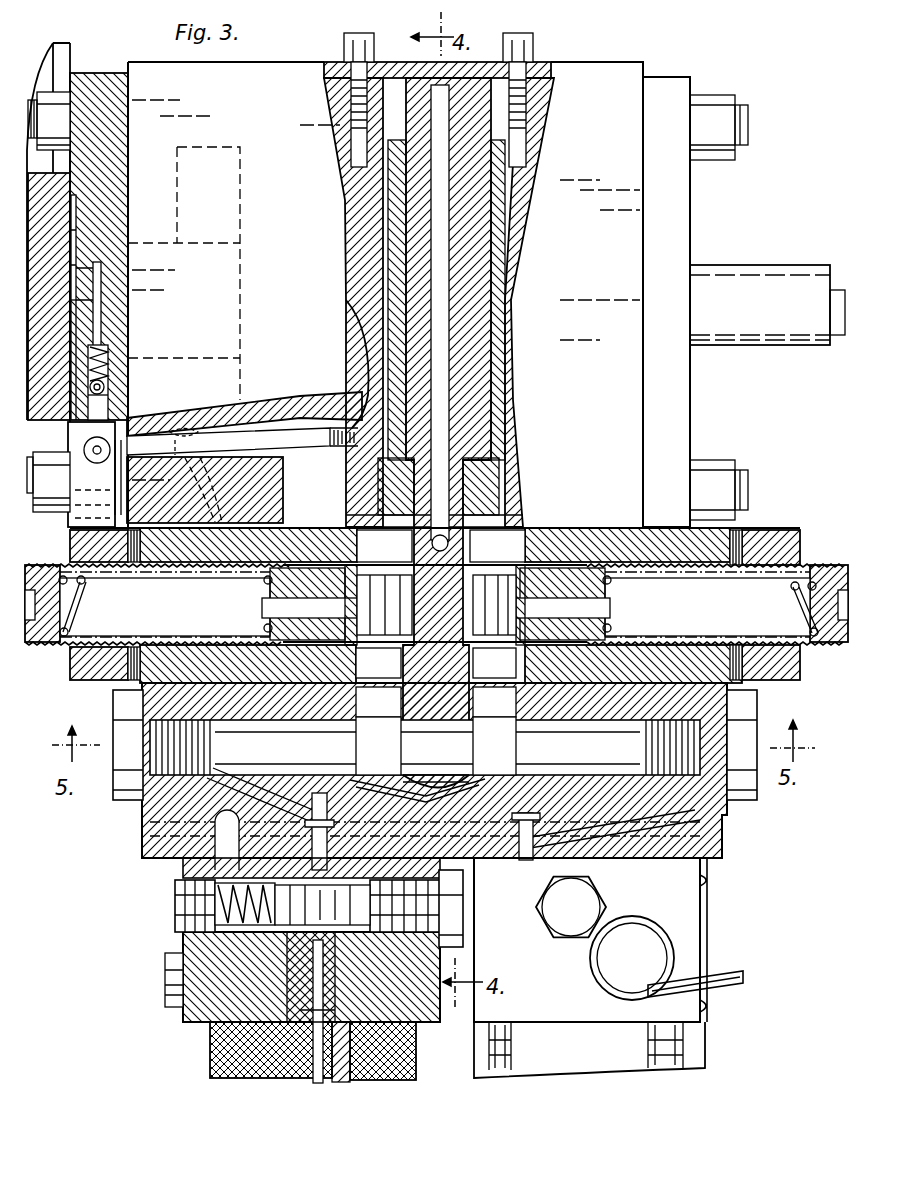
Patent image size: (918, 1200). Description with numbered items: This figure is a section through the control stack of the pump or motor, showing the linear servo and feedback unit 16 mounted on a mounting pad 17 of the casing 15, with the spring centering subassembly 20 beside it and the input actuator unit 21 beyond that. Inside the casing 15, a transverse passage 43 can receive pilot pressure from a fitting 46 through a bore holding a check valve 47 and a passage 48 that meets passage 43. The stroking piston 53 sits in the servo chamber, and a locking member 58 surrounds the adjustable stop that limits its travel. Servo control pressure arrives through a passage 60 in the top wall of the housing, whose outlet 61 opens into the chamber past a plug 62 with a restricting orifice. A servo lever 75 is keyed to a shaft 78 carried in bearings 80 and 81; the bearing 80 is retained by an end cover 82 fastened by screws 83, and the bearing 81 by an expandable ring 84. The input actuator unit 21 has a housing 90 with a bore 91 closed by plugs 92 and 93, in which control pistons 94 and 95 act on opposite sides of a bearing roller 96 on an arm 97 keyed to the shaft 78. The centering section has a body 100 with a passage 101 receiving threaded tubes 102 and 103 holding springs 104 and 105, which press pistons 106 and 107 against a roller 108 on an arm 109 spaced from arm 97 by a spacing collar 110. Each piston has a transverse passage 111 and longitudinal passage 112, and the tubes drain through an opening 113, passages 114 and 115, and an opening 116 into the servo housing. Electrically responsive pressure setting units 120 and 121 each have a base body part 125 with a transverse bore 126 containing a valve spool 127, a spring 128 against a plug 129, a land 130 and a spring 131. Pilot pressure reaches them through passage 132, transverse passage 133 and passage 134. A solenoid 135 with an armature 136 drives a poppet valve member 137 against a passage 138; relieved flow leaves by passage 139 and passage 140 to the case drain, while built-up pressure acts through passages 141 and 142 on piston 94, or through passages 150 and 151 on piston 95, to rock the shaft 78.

The casing 15 is at (56, 46).
The linear servo and feedback unit 16 is at (573, 52).
The mounting pad 17 is at (68, 434).
The spring centering subassembly 20 is at (733, 526).
The input actuator unit 21 is at (738, 856).
The transverse passage 43 is at (78, 304).
The fitting 46 is at (92, 468).
The check valve 47 is at (109, 358).
The passage 48 is at (101, 318).
The stroking piston 53 is at (258, 148).
The locking member 58 is at (775, 275).
The passage 60 is at (260, 416).
The outlet 61 is at (360, 400).
The plug 62 is at (326, 437).
The servo lever 75 is at (490, 300).
The shaft 78 is at (455, 248).
The bearing 80 is at (505, 130).
The bearing 81 is at (505, 470).
The end cover 82 is at (482, 62).
The screws 83 is at (358, 40).
The expandable ring 84 is at (515, 505).
The housing 90 is at (710, 832).
The bore 91 is at (570, 742).
The plug 92 is at (118, 795).
The plug 93 is at (745, 805).
The control piston 94 is at (370, 728).
The control piston 95 is at (498, 728).
The bearing roller 96 is at (398, 752).
The arm 97 is at (458, 795).
The body 100 is at (608, 548).
The passage 101 is at (523, 530).
The tube 102 is at (72, 662).
The tube 103 is at (805, 660).
The spring 104 is at (66, 605).
The spring 105 is at (795, 588).
The piston 106 is at (266, 582).
The piston 107 is at (612, 612).
The roller 108 is at (384, 546).
The arm 109 is at (497, 546).
The spacing collar 110 is at (494, 663).
The transverse passage 111 is at (378, 663).
The internal longitudinal passage 112 is at (268, 598).
The opening 113 is at (435, 604).
The passage 114 is at (200, 572).
The passage 115 is at (208, 484).
The opening 116 is at (190, 438).
The electrically responsive pressure setting unit 120 is at (190, 1020).
The electrically responsive pressure setting unit 121 is at (706, 1028).
The base body part 125 is at (185, 944).
The transverse bore 126 is at (365, 965).
The valve spool 127 is at (250, 938).
The spring 128 is at (365, 935).
The plug 129 is at (453, 920).
The land 130 is at (360, 985).
The spring 131 is at (215, 905).
The passage 132 is at (285, 497).
The transverse passage 133 is at (527, 848).
The passage 134 is at (183, 868).
The solenoid 135 is at (255, 1075).
The armature 136 is at (355, 1078).
The poppet valve member 137 is at (315, 1082).
The passage 138 is at (285, 960).
The passage 139 is at (445, 1028).
The passage 140 is at (388, 805).
The passage 141 is at (310, 848).
The passage 142 is at (283, 770).
The passage 150 is at (540, 890).
The passage 151 is at (618, 862).